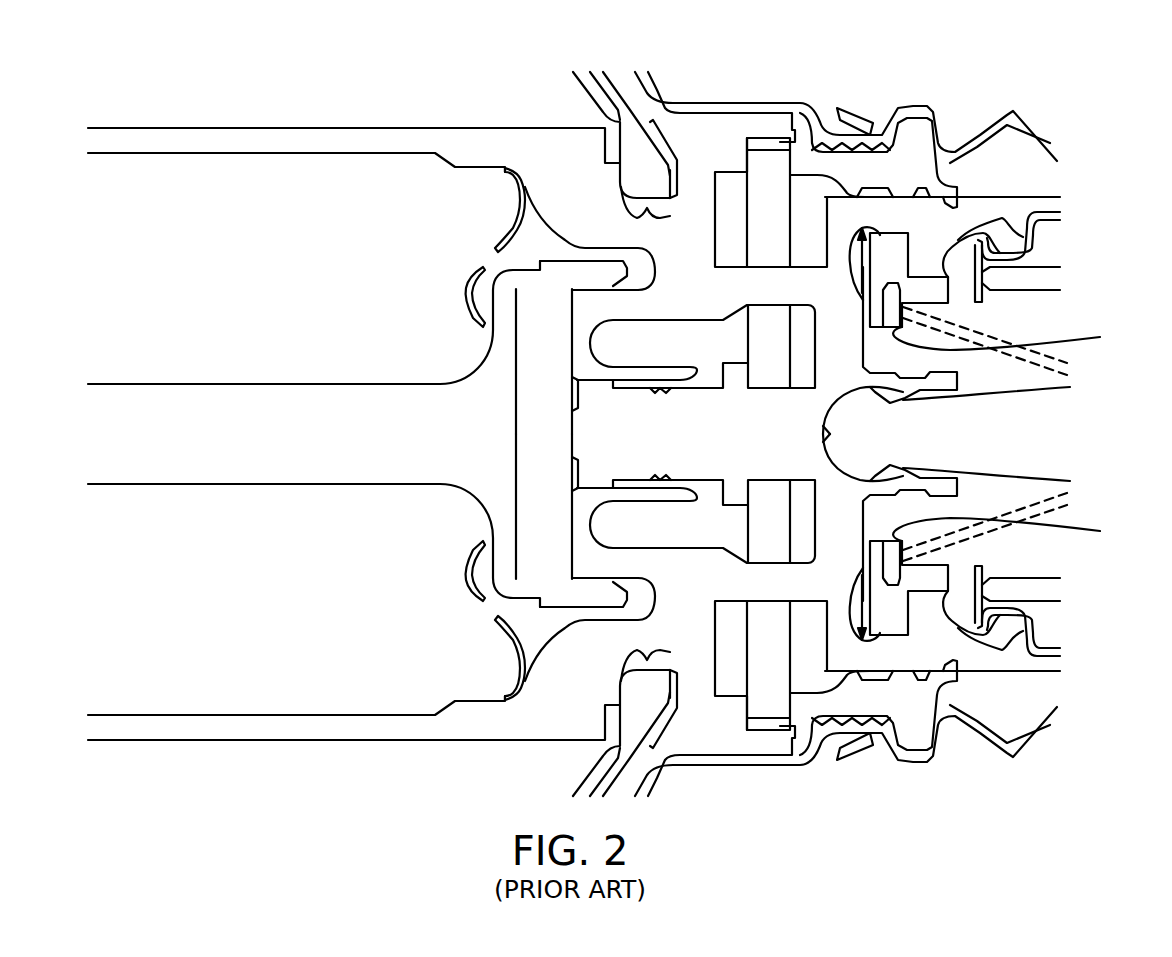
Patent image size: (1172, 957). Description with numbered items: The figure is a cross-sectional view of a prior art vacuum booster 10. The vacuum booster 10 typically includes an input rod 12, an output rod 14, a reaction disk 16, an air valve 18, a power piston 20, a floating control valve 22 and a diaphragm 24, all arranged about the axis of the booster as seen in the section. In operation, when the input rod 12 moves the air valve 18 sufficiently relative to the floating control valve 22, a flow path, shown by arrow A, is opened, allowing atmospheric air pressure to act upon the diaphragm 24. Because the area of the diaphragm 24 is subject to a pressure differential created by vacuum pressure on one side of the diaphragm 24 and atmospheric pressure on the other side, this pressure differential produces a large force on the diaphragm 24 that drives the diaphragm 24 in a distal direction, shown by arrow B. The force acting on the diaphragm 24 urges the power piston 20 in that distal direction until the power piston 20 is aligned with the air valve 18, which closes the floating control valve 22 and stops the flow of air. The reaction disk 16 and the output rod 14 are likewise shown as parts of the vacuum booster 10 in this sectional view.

The vacuum booster 10 is at (1068, 92).
The input rod 12 is at (1035, 432).
The output rod 14 is at (292, 468).
The reaction disk 16 is at (527, 424).
The air valve 18 is at (703, 460).
The power piston 20 is at (693, 250).
The floating control valve 22 is at (887, 250).
The diaphragm 24 is at (498, 240).
The arrow A is at (1072, 337).
The arrow B is at (273, 313).